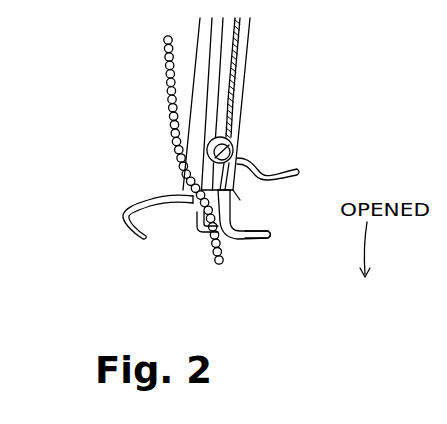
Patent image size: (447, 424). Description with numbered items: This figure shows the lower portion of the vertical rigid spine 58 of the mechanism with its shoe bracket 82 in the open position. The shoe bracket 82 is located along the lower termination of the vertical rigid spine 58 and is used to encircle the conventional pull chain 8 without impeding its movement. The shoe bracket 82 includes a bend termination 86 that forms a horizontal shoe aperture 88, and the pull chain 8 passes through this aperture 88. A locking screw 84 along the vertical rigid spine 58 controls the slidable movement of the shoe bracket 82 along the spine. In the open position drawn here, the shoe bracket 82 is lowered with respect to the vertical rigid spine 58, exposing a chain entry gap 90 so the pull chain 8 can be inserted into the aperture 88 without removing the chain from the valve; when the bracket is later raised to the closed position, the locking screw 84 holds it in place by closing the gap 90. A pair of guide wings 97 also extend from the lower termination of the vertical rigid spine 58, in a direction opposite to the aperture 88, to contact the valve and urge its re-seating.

The pull chain 8 is at (163, 50).
The vertical rigid spine 58 is at (243, 62).
The locking screw 84 is at (232, 138).
The guide wings 97 is at (262, 158).
The shoe bracket 82 is at (228, 200).
The bend termination 86 is at (256, 224).
The horizontal shoe aperture 88 is at (243, 243).
The chain entry gap 90 is at (197, 205).